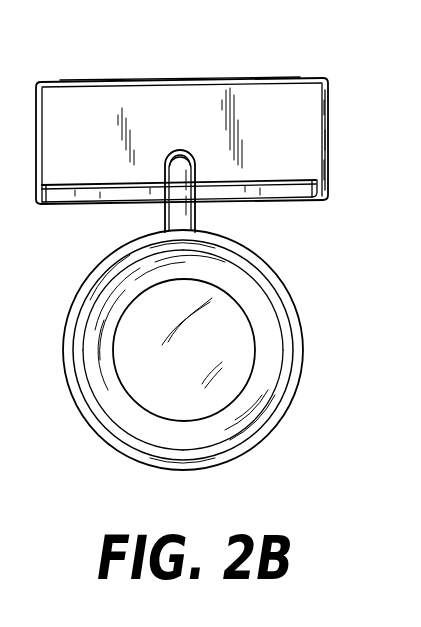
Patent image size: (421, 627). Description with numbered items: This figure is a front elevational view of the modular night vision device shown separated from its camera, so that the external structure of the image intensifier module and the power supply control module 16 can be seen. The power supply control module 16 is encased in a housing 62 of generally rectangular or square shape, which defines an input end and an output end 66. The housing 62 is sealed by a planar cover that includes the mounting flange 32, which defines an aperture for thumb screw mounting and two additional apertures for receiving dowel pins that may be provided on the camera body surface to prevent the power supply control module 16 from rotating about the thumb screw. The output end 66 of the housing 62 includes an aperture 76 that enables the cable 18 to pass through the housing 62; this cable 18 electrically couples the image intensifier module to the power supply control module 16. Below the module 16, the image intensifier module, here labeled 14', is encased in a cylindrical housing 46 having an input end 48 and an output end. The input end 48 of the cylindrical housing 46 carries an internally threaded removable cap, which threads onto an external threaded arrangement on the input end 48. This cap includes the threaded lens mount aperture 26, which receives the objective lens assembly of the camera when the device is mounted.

The power supply control module 16 is at (318, 78).
The housing 62 is at (222, 79).
The output end 66 is at (312, 130).
The mounting flange 32 is at (272, 183).
The cable 18 is at (197, 224).
The aperture 76 is at (192, 150).
The ring member 14' is at (197, 350).
The cylindrical housing 46 is at (302, 336).
The input end 48 is at (275, 397).
The threaded lens mount aperture 26 is at (146, 412).